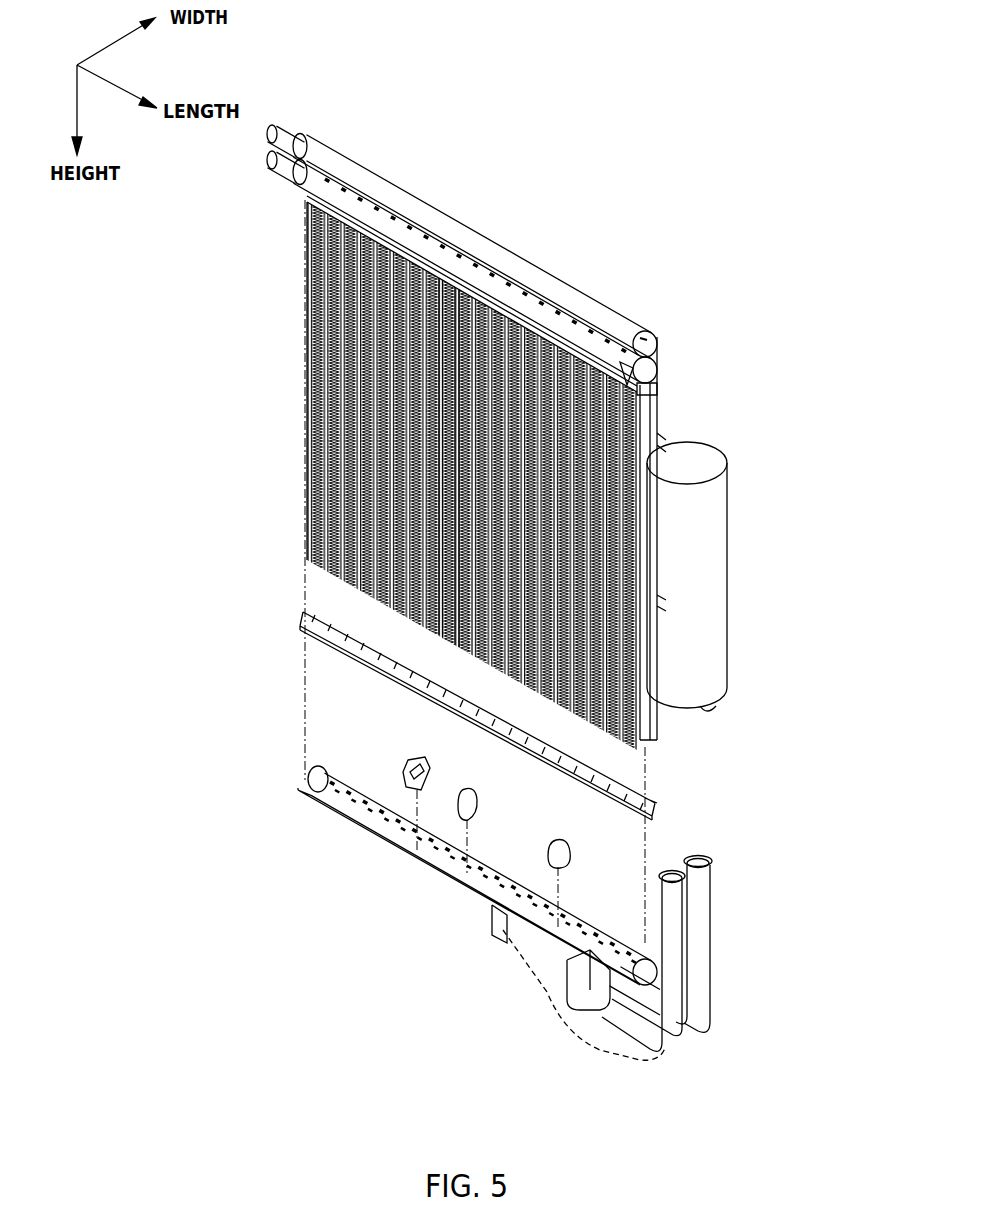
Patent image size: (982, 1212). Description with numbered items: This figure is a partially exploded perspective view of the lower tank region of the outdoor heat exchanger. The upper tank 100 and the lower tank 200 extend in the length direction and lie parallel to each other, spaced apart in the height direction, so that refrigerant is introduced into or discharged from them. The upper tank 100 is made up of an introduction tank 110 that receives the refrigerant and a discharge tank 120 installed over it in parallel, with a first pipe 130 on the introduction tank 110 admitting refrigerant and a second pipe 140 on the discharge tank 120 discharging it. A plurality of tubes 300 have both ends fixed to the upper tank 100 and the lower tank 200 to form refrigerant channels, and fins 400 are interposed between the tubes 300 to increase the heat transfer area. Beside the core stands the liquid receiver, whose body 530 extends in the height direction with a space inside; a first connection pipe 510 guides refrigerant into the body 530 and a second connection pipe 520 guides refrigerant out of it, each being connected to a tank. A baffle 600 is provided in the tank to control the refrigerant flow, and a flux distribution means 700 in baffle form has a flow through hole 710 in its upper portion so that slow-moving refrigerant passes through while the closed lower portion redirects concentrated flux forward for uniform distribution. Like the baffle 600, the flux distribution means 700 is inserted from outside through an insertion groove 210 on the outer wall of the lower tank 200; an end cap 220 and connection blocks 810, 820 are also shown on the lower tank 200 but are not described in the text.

The upper tank 100 is at (527, 152).
The introduction tank 110 is at (482, 282).
The discharge tank 120 is at (436, 212).
The first pipe 130 is at (290, 168).
The second pipe 140 is at (303, 132).
The lower tank 200 is at (446, 872).
The insertion groove 210 is at (648, 1032).
The end cap 220 is at (310, 775).
The tube 300 is at (633, 418).
The fin 400 is at (633, 392).
The first connection pipe 510 is at (673, 1062).
The second connection pipe 520 is at (702, 995).
The body 530 is at (710, 510).
The baffle 600 is at (478, 802).
The flux distribution means 700 is at (440, 749).
The flow through hole 710 is at (428, 764).
The connection block 810 is at (490, 920).
The connection block 820 is at (583, 985).